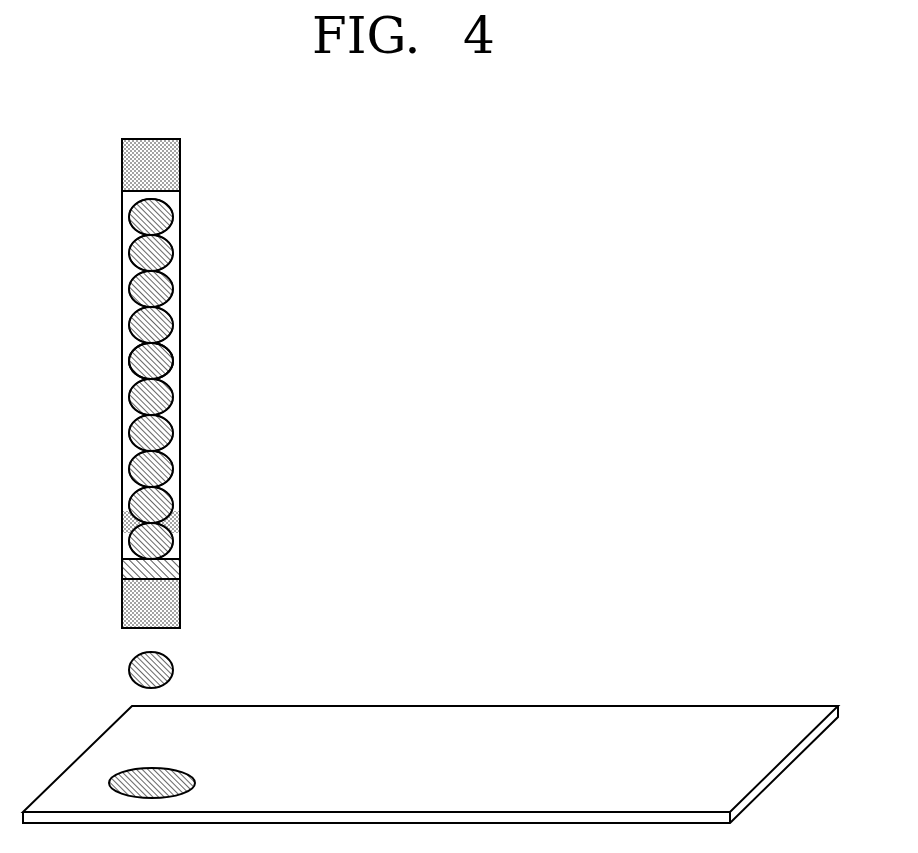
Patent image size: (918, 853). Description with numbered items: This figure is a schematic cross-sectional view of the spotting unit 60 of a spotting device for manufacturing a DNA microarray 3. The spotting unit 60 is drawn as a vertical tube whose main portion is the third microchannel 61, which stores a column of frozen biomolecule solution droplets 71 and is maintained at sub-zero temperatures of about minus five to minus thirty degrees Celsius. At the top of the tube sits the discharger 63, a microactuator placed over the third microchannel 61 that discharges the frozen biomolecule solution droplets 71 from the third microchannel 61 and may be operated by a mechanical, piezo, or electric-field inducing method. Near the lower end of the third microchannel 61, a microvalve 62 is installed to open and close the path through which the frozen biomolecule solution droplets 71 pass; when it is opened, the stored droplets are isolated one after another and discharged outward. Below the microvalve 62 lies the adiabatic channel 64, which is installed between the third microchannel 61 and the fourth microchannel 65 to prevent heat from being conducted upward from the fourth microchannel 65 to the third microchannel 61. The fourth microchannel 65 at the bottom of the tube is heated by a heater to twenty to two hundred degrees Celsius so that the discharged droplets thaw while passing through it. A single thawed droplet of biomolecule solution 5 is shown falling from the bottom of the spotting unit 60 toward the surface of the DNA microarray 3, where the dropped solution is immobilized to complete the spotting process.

The spotting unit 60 is at (93, 338).
The discharger 63 is at (160, 168).
The third microchannel 61 is at (181, 292).
The frozen biomolecule solution droplets 71 is at (162, 362).
The microvalve 62 is at (165, 523).
The adiabatic channel 64 is at (182, 570).
The fourth microchannel 65 is at (178, 606).
The biomolecule solution 5 is at (170, 670).
The DNA microarray 3 is at (553, 717).